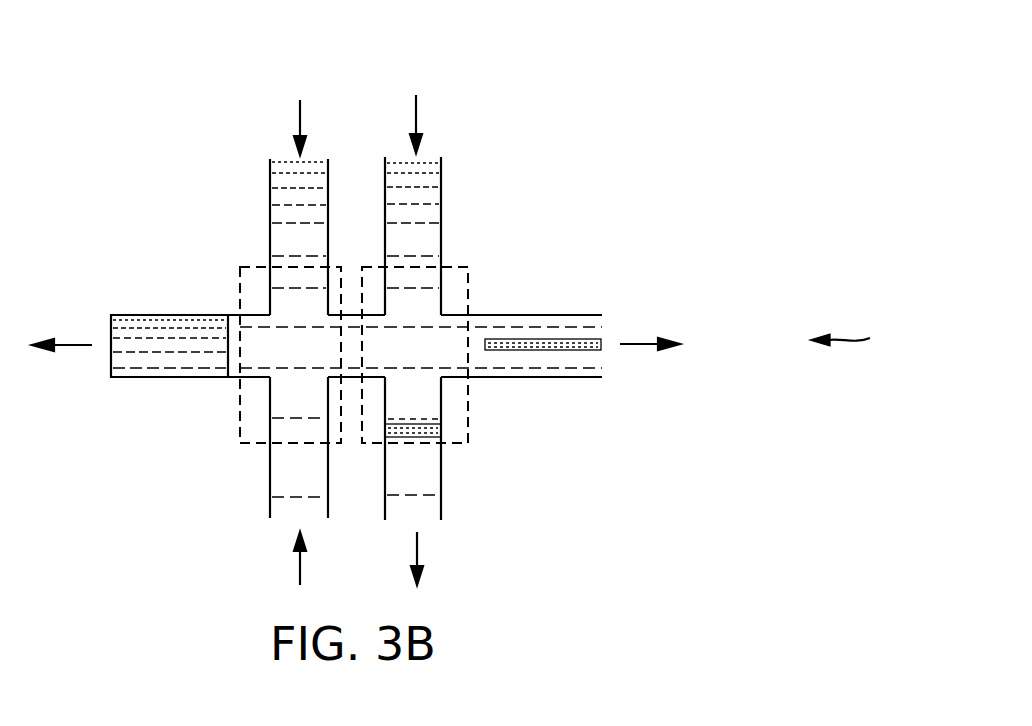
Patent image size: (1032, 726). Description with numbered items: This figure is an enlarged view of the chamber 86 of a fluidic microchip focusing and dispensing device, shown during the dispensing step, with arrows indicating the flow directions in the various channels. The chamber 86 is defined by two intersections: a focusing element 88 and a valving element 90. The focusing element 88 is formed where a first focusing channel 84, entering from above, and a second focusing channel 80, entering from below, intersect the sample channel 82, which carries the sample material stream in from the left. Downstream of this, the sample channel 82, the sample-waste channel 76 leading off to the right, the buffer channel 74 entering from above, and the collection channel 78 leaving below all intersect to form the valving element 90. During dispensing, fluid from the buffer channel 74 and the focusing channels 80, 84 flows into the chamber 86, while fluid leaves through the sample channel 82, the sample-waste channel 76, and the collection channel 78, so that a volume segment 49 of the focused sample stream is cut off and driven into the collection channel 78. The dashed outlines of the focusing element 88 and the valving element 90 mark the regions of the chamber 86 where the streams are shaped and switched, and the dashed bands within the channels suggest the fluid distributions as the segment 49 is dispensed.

The first focusing channel 84 is at (290, 223).
The buffer channel 74 is at (420, 198).
The sample channel 82 is at (260, 330).
The sample-waste channel 76 is at (553, 326).
The second focusing channel 80 is at (285, 490).
The collection channel 78 is at (418, 480).
The focusing element 88 is at (237, 285).
The valving element 90 is at (473, 290).
The segment 49 is at (441, 430).
The chamber 86 is at (863, 341).